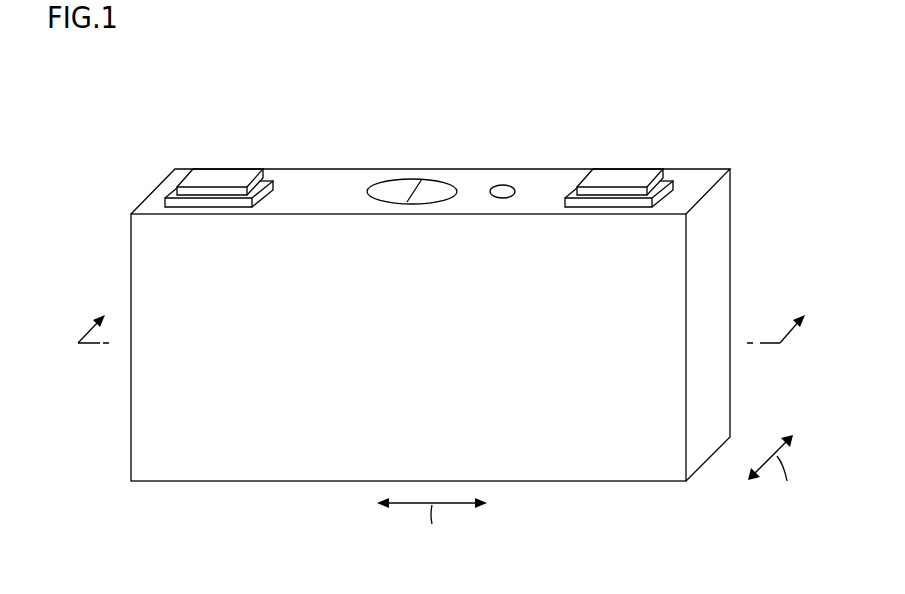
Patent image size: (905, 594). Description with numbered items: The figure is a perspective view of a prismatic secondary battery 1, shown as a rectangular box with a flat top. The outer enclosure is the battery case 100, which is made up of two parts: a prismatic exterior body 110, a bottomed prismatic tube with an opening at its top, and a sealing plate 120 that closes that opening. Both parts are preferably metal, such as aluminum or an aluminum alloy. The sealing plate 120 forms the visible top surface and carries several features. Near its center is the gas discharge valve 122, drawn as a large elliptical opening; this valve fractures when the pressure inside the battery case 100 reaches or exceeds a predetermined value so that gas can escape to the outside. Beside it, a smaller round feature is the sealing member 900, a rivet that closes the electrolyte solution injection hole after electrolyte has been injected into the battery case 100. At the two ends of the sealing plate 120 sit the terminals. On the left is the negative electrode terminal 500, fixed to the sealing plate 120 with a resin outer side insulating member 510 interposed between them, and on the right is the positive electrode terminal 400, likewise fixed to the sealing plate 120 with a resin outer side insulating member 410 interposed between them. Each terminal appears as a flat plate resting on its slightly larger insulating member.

The prismatic secondary battery 1 is at (160, 95).
The battery case 100 is at (675, 126).
The prismatic exterior body 110 is at (718, 217).
The sealing plate 120 is at (697, 178).
The gas discharge valve 122 is at (426, 189).
The positive electrode terminal 400 is at (638, 178).
The outer side insulating member 410 is at (566, 197).
The negative electrode terminal 500 is at (238, 180).
The outer side insulating member 510 is at (165, 198).
The sealing member 900 is at (503, 185).